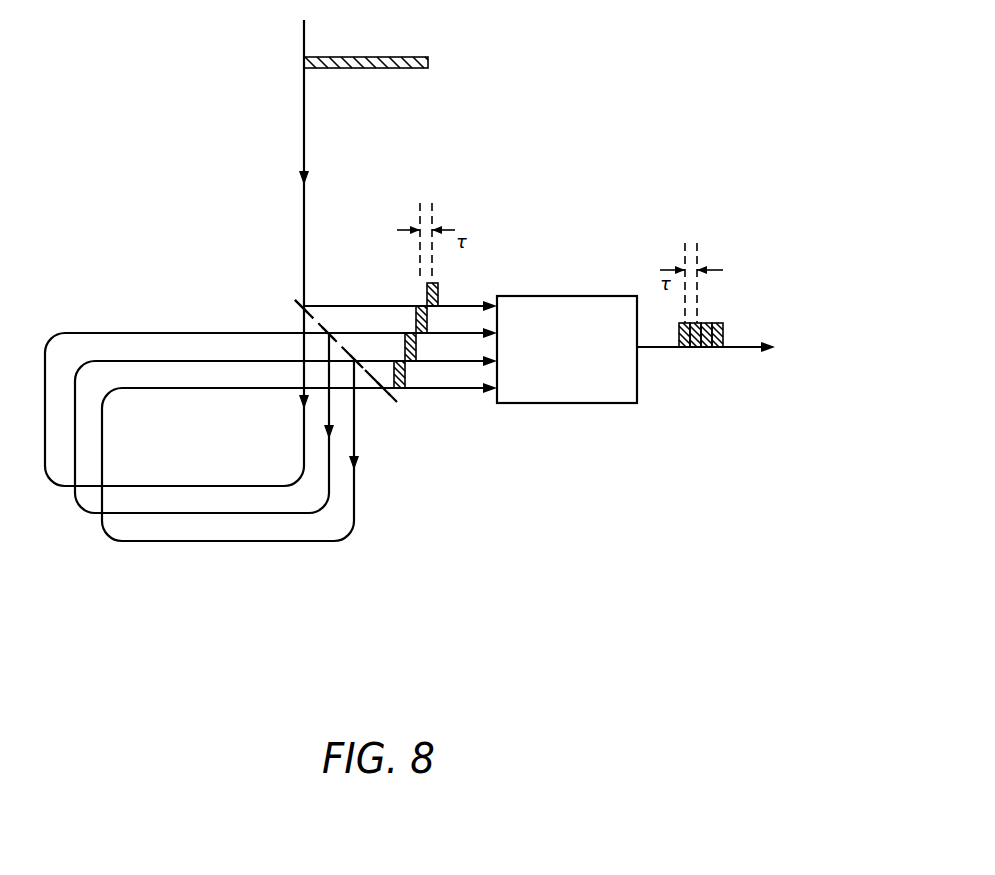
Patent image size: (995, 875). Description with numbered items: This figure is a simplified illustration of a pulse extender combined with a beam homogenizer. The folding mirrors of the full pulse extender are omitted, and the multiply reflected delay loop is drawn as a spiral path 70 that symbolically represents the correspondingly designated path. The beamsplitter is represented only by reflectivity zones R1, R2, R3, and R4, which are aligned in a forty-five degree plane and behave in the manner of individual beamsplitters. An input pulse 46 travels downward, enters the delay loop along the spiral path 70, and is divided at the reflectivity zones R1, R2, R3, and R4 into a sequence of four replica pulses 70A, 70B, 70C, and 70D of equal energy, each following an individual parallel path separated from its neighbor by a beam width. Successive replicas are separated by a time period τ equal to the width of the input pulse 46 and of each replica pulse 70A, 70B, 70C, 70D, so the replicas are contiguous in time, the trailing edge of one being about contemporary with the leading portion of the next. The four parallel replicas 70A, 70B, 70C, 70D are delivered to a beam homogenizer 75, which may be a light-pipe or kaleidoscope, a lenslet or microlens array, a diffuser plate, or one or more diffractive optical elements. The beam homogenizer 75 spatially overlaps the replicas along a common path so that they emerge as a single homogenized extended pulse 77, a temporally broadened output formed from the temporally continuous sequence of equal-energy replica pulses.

The input pulse 46 is at (428, 63).
The spiral path 70 is at (297, 542).
The first replica pulse 70A is at (438, 288).
The second replica pulse 70B is at (414, 318).
The third replica pulse 70C is at (414, 352).
The fourth replica pulse 70D is at (403, 389).
The beam homogenizer 75 is at (563, 393).
The homogenized extended pulse 77 is at (730, 360).
The first reflectivity zone R1 is at (297, 303).
The second reflectivity zone R2 is at (326, 331).
The third reflectivity zone R3 is at (361, 366).
The fourth reflectivity zone R4 is at (384, 390).